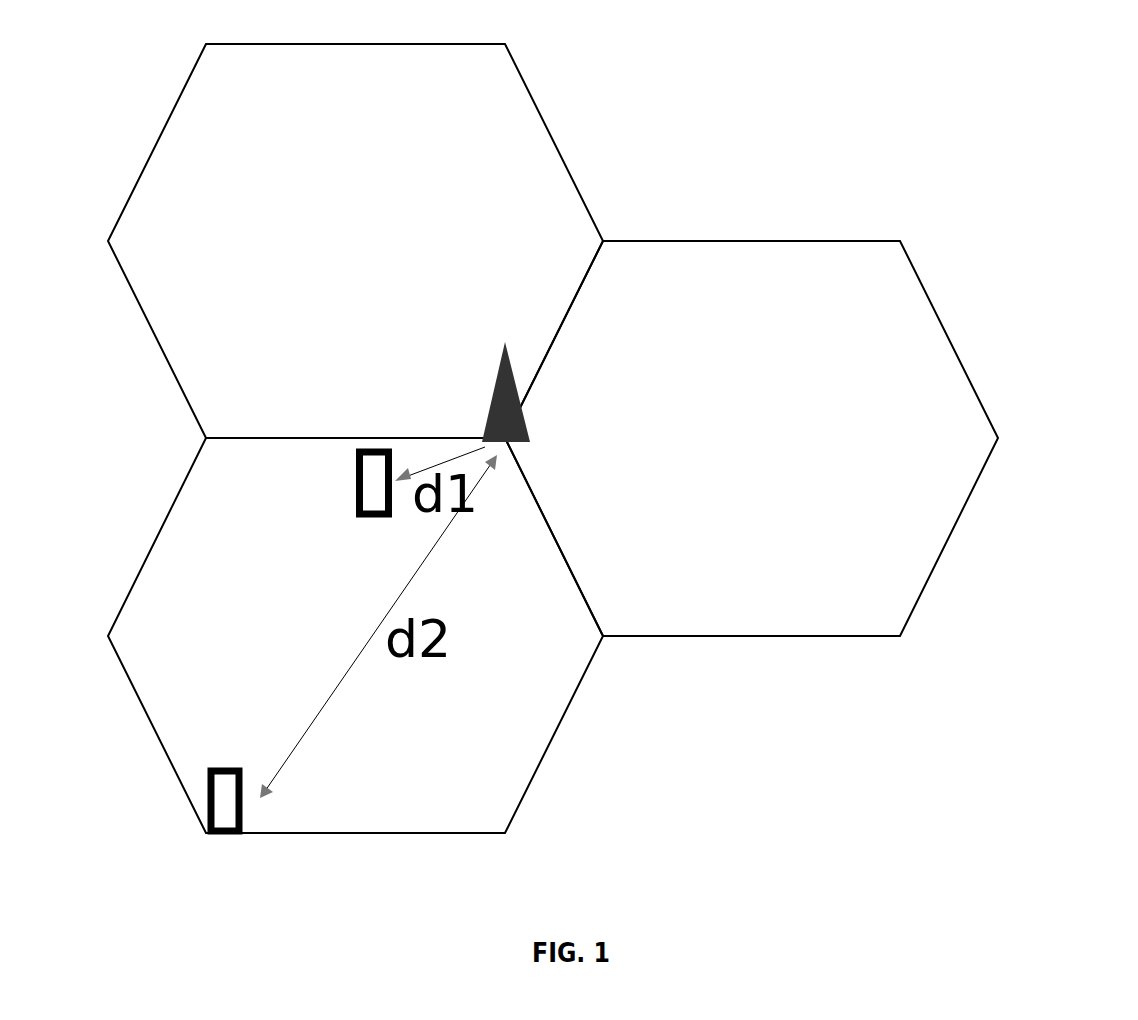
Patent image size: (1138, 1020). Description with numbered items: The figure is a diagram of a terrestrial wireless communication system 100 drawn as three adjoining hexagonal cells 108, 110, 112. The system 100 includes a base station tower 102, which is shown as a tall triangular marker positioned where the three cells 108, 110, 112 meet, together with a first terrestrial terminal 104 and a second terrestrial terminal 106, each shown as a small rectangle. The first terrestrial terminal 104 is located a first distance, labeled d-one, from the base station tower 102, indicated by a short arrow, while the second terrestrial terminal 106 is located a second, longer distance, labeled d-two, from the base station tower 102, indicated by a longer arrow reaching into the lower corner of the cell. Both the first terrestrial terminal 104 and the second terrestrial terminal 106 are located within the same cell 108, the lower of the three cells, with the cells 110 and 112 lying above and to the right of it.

The terrestrial wireless communication system 100 is at (1056, 100).
The base station tower 102 is at (491, 378).
The first terrestrial terminal 104 is at (356, 512).
The second terrestrial terminal 106 is at (243, 765).
The cell 108 is at (150, 548).
The cell 110 is at (546, 119).
The cell 112 is at (950, 338).